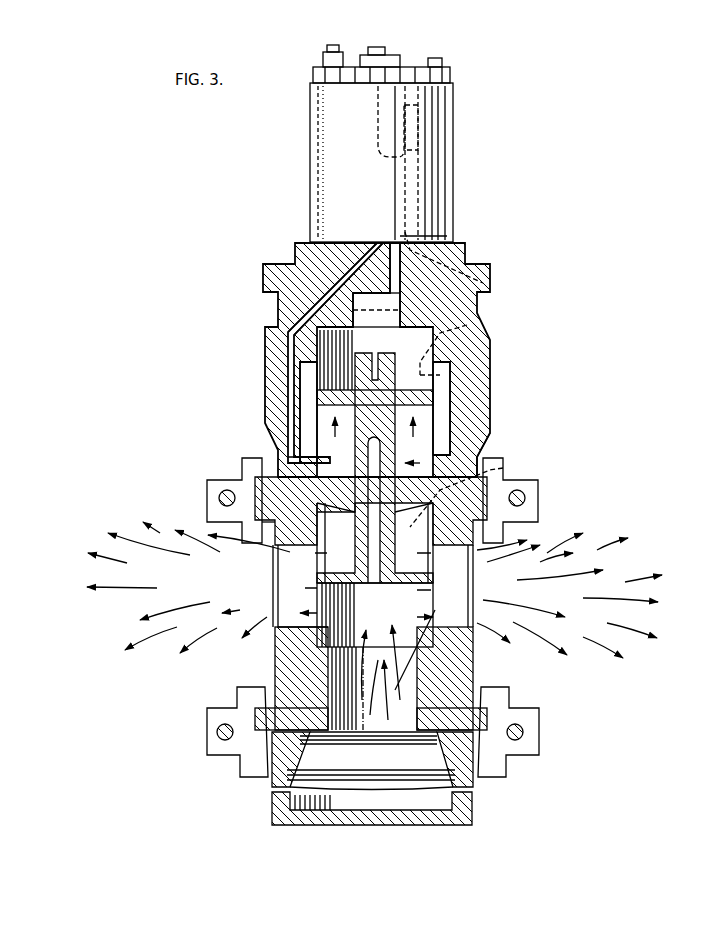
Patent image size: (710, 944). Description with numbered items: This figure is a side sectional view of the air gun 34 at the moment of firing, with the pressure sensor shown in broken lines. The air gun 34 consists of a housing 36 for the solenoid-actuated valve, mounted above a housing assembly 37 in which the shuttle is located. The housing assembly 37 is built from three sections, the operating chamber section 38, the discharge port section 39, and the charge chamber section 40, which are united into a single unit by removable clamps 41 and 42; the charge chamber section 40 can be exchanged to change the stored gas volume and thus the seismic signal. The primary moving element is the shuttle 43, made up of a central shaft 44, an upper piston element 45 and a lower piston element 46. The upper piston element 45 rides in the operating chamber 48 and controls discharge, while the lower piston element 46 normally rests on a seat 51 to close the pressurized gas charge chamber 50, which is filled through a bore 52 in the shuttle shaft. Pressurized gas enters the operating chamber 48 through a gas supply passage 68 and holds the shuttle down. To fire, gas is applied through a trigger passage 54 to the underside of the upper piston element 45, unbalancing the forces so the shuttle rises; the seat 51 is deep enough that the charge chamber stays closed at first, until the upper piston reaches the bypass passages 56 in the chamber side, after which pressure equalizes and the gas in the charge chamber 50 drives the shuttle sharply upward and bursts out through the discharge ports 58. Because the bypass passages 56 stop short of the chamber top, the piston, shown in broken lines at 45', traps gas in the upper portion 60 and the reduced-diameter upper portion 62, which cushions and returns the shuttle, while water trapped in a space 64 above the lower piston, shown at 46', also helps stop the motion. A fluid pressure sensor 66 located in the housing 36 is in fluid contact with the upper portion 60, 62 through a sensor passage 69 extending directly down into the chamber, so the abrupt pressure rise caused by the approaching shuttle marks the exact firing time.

The air gun 34 is at (533, 283).
The housing for the solenoid-actuated valve 36 is at (453, 100).
The housing assembly 37 is at (528, 422).
The operating chamber section 38 is at (490, 340).
The discharge port section 39 is at (477, 660).
The charge chamber section 40 is at (475, 782).
The removable clamp 41 is at (540, 495).
The removable clamp 42 is at (539, 720).
The shuttle 43 is at (477, 458).
The central shaft 44 is at (353, 430).
The upper piston element 45 is at (420, 468).
The upper piston element position above bypass passages 45' is at (470, 337).
The lower piston element 46 is at (421, 585).
The lower piston element raised position 46' is at (477, 492).
The operating chamber 48 is at (330, 460).
The charge chamber 50 is at (330, 800).
The seat 51 is at (305, 648).
The bore 52 is at (352, 575).
The trigger passage 54 is at (290, 335).
The bypass passages 56 is at (305, 385).
The discharge ports 58 is at (367, 550).
The upper portion of the operating chamber 60 is at (417, 337).
The reduced-diameter upper portion 62 is at (397, 300).
The space above the lower piston 64 is at (262, 527).
The fluid pressure sensor 66 is at (443, 137).
The gas supply passage 68 is at (447, 242).
The sensor passage 69 is at (470, 274).